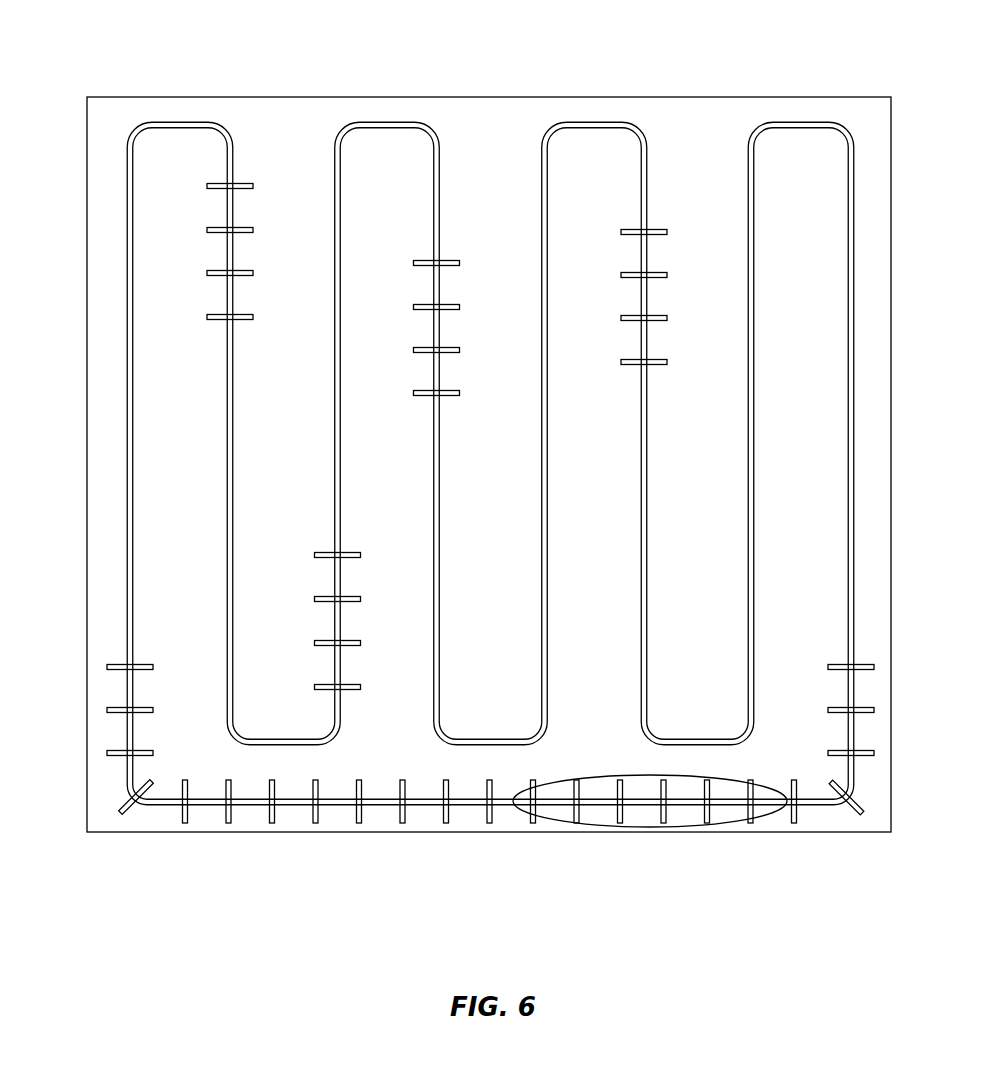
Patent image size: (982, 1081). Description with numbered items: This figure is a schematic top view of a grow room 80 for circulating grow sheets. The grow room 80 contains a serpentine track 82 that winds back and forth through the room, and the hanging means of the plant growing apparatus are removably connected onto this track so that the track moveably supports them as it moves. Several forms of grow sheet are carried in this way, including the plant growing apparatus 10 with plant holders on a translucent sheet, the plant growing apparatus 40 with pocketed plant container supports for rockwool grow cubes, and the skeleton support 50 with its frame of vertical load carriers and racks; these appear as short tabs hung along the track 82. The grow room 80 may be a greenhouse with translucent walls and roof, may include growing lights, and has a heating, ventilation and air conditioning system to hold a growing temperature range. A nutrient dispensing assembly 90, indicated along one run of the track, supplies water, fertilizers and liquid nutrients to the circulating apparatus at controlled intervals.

The grow room 80 is at (463, 458).
The serpentine track 82 is at (128, 351).
The plant growing apparatus 10 is at (118, 712).
The plant growing apparatus 40 is at (226, 810).
The skeleton support 50 is at (357, 810).
The nutrient dispensing assembly 90 is at (768, 817).